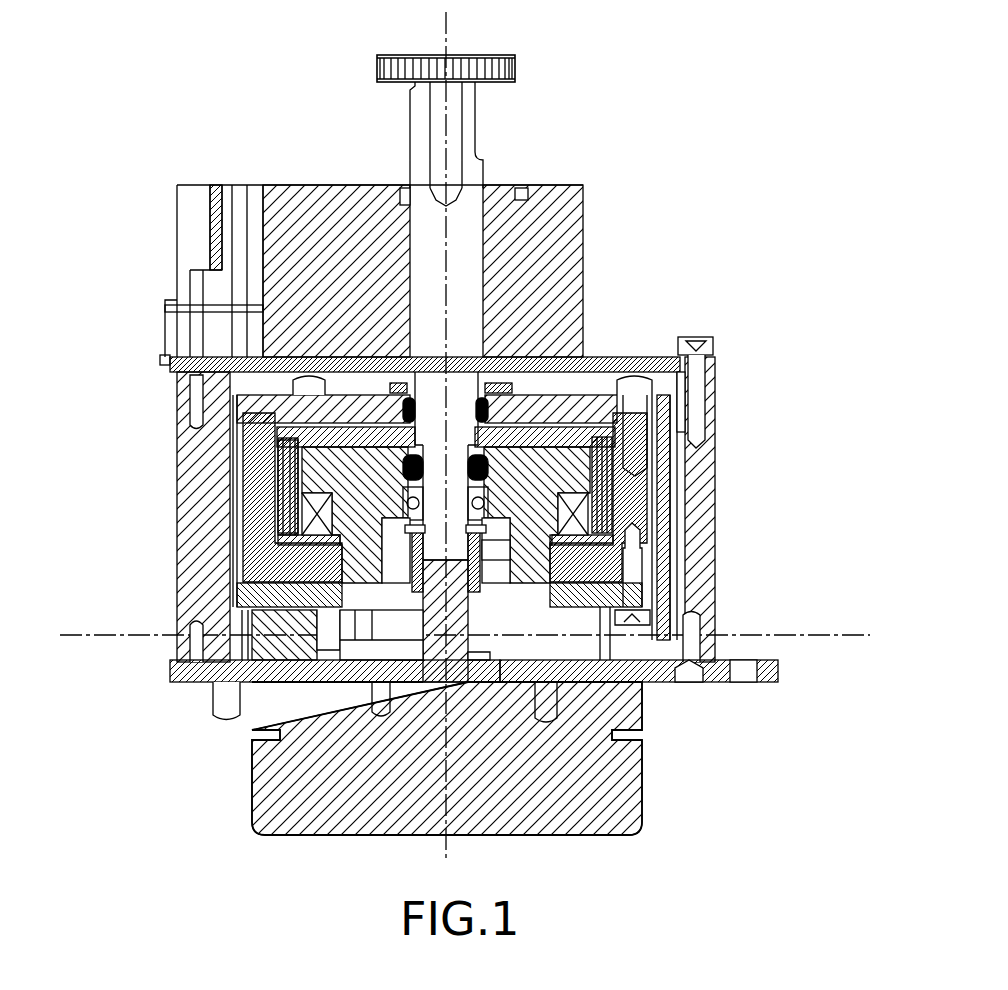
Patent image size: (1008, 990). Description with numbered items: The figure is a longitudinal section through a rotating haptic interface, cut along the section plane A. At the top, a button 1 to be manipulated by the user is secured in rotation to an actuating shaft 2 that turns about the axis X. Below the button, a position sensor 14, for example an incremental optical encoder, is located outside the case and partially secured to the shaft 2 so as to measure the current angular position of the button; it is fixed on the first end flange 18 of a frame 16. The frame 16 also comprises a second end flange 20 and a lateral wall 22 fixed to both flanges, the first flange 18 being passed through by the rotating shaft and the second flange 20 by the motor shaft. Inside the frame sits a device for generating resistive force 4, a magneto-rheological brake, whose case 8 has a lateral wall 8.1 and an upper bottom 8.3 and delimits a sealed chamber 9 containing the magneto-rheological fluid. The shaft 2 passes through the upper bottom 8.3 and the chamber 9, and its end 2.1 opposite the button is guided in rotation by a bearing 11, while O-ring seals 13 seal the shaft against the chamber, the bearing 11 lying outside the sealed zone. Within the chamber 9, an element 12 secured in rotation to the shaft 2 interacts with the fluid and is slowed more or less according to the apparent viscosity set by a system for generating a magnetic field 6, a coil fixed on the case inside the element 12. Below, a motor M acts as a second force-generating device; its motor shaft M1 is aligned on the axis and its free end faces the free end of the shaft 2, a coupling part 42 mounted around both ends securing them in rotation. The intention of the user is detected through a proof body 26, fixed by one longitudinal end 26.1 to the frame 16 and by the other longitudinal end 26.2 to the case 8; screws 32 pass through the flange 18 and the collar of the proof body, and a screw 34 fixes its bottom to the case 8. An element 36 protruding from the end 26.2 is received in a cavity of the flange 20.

The axis X is at (446, 36).
The section plane A- A is at (65, 633).
The button 1 is at (505, 73).
The actuating shaft 2 is at (470, 141).
The end of the shaft 2.1 is at (452, 527).
The device for generating resistive force 4 is at (708, 410).
The system for generating a magnetic field 6 is at (313, 517).
The case 8 is at (270, 472).
The lateral wall 8.1 is at (634, 503).
The upper bottom 8.3 is at (598, 405).
The sealed chamber 9 is at (282, 522).
The bearing 11 is at (392, 500).
The element 12 is at (612, 482).
The seals 13 is at (488, 466).
The position sensor 14 is at (572, 240).
The frame 16 is at (645, 687).
The first end flange 18 is at (182, 360).
The second end flange 20 is at (276, 667).
The lateral wall 22 is at (186, 580).
The proof body 26 is at (236, 592).
The longitudinal end 26.1 is at (710, 380).
The longitudinal end 26.2 is at (655, 590).
The screw 32 is at (705, 351).
The screw 34 is at (632, 570).
The element 36 is at (358, 658).
The coupling part 42 is at (488, 556).
The motor M is at (640, 795).
The motor shaft M1 is at (460, 630).